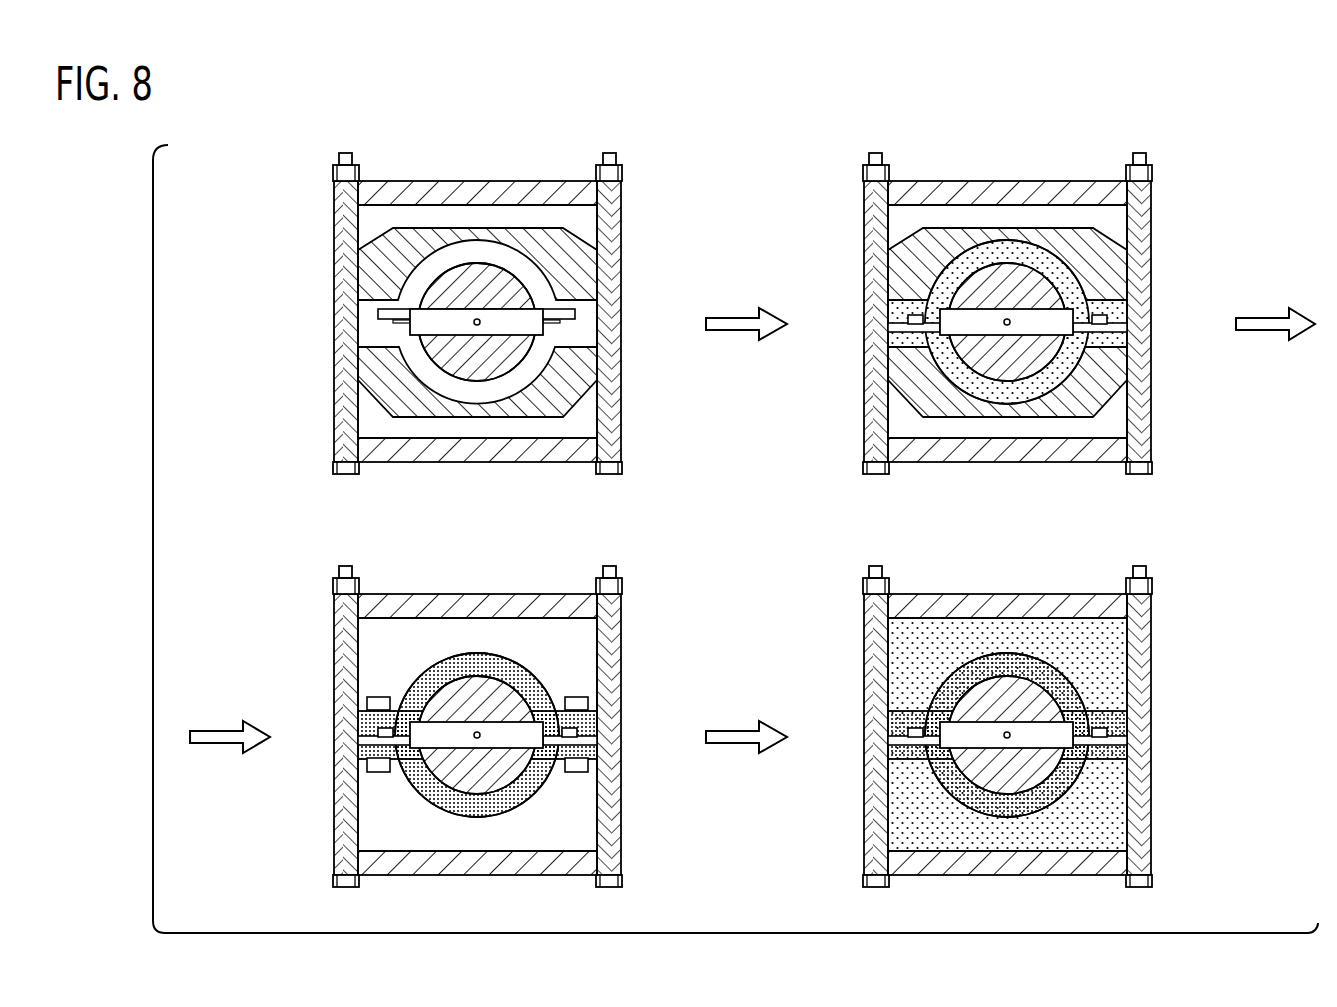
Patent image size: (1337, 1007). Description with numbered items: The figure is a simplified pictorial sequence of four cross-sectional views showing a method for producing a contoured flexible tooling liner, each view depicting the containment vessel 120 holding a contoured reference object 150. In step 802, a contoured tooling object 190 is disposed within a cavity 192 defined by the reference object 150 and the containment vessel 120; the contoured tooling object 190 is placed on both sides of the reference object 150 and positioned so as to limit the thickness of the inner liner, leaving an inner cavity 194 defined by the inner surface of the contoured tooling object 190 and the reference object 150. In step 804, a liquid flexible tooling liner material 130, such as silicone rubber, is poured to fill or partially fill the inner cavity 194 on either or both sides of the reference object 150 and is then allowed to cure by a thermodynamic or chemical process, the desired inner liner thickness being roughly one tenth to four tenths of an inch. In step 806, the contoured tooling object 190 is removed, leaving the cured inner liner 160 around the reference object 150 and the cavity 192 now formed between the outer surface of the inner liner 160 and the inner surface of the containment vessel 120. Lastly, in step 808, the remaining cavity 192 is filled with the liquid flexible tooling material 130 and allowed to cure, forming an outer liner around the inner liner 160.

The containment vessel 120 is at (385, 195).
The cavity 192 is at (372, 224).
The contoured tooling object 190 is at (739, 322).
The inner cavity 194 is at (422, 367).
The contoured reference object 150 is at (493, 290).
The flexible tooling material 130 is at (1038, 257).
The cured inner liner 160 is at (508, 665).
The step of disposing the contoured tooling object 802 is at (491, 151).
The step of pouring liner material 804 is at (1021, 151).
The step of removing the contoured tooling object 806 is at (491, 566).
The step of filling the remaining cavity 808 is at (1021, 566).